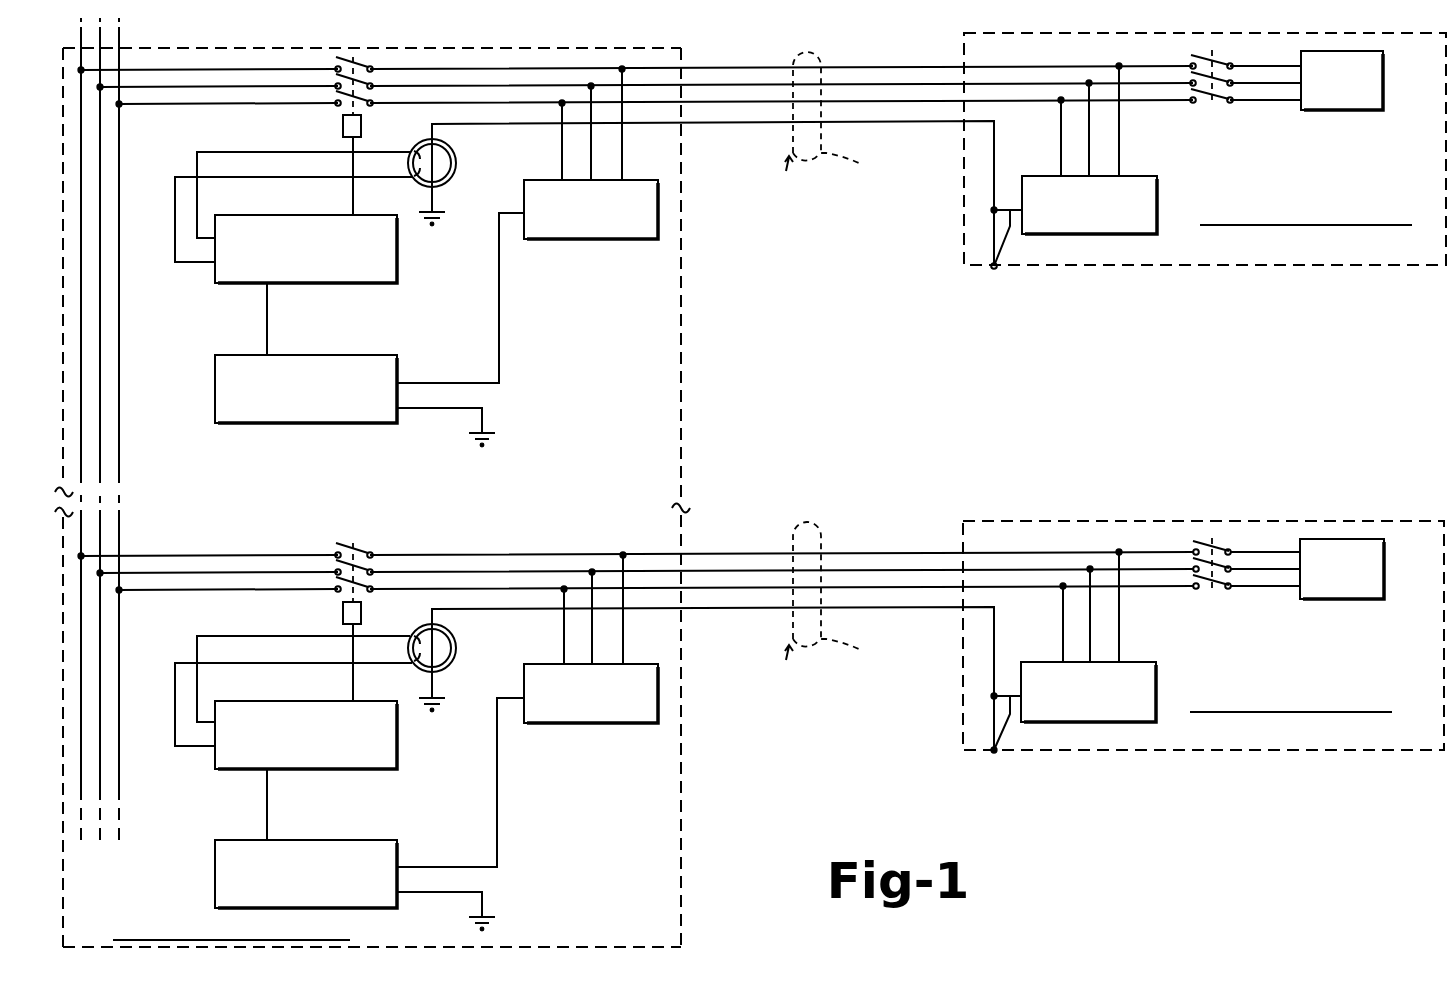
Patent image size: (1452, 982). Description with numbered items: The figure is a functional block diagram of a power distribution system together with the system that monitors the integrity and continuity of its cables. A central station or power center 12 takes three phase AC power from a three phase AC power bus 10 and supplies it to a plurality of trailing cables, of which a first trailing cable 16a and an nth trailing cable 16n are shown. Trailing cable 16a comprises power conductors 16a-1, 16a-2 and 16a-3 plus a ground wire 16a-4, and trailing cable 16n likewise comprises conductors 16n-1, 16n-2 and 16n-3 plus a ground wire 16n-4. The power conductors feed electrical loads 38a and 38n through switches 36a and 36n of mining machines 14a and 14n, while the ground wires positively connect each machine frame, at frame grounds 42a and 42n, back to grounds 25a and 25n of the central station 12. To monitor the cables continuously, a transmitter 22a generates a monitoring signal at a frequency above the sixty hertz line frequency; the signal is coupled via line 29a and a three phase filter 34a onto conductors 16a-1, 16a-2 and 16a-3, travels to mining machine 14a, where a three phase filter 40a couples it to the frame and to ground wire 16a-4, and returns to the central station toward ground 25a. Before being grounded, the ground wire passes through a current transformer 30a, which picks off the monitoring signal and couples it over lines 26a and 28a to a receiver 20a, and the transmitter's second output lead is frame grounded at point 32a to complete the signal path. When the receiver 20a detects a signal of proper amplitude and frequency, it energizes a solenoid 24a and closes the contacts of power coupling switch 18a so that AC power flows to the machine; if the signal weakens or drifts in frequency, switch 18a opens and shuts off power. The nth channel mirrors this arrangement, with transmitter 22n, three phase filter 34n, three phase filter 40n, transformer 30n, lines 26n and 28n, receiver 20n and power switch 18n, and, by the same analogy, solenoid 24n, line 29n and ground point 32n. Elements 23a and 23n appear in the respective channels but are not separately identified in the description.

The three phase AC power bus 10 is at (254, 428).
The central station 12 is at (683, 801).
The mining machine 14a is at (1290, 263).
The mining machine 14n is at (1203, 635).
The trailing cable 16a is at (830, 130).
The trailing cable 16n is at (828, 610).
The power conductor 16a-1 is at (712, 68).
The power conductor 16a-2 is at (888, 84).
The power conductor 16a-3 is at (878, 102).
The ground wire 16a-4 is at (737, 127).
The power conductor 16n-1 is at (689, 541).
The power conductor 16n-2 is at (699, 548).
The power conductor 16n-3 is at (708, 611).
The ground wire 16n-4 is at (712, 678).
The power coupling switch 18a is at (385, 67).
The power switch 18n is at (385, 563).
The receiver 20a is at (397, 258).
The receiver 20n is at (335, 770).
The transmitter 22a is at (397, 361).
The transmitter 22n is at (335, 866).
The trip line to receiver 23a is at (342, 145).
The trip line to receiver 23n is at (319, 662).
The solenoid 24a is at (343, 128).
The trip coil 24n is at (318, 610).
The ground 25a is at (436, 189).
The ground 25n is at (457, 687).
The line 26a is at (222, 151).
The line 26n is at (292, 661).
The line 28a is at (266, 177).
The line 28n is at (293, 704).
The line 29a is at (407, 163).
The ground conductor line 29n is at (442, 757).
The current transformer 30a is at (468, 145).
The transformer 30n is at (456, 640).
The frame ground point 32a is at (488, 424).
The ground 32n is at (471, 906).
The three phase filter 34a is at (635, 241).
The three phase filter 34n is at (591, 655).
The switch 36a is at (1231, 63).
The switch 36n is at (1236, 555).
The electrical load 38a is at (1383, 70).
The electrical load 38n is at (1366, 570).
The three phase filter 40a is at (1157, 198).
The three phase filter 40n is at (1104, 635).
The frame ground 42a is at (991, 269).
The machine frame ground 42n is at (1021, 737).